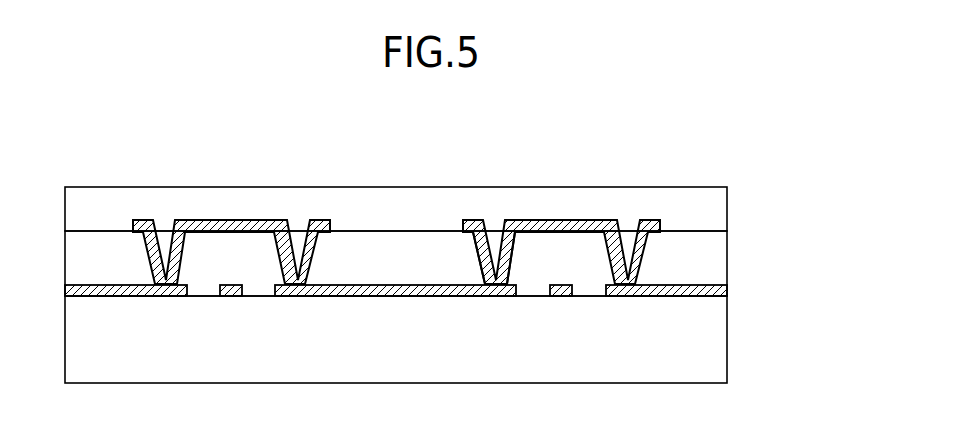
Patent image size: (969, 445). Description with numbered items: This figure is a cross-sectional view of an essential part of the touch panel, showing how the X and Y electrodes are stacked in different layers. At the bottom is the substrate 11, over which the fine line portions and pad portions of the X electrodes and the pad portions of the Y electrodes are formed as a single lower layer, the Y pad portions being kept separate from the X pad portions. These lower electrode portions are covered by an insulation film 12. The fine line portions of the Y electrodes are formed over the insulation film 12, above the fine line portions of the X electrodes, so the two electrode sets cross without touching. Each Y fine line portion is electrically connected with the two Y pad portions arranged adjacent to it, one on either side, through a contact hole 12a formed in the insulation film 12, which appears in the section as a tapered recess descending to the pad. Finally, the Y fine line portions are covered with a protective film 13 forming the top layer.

The substrate 11 is at (717, 338).
The insulation film 12 is at (717, 256).
The protective film 13 is at (717, 205).
The contact hole 12a is at (513, 247).